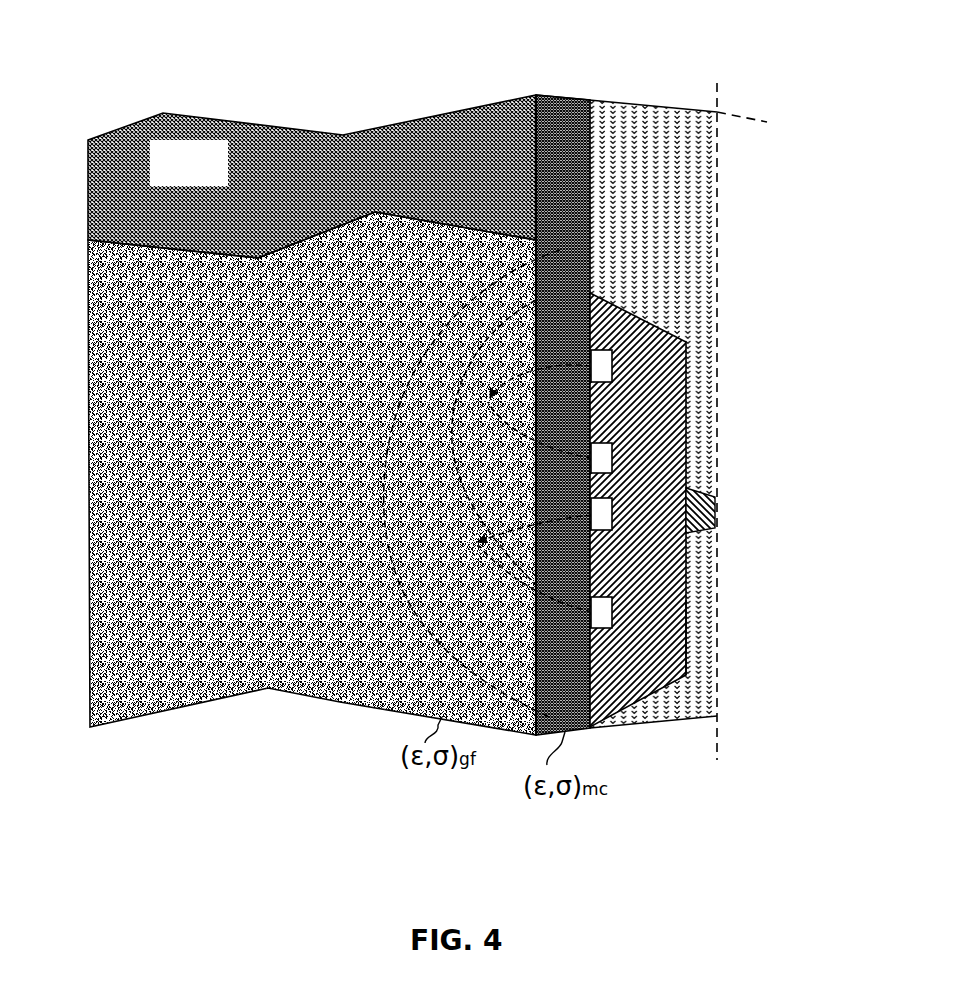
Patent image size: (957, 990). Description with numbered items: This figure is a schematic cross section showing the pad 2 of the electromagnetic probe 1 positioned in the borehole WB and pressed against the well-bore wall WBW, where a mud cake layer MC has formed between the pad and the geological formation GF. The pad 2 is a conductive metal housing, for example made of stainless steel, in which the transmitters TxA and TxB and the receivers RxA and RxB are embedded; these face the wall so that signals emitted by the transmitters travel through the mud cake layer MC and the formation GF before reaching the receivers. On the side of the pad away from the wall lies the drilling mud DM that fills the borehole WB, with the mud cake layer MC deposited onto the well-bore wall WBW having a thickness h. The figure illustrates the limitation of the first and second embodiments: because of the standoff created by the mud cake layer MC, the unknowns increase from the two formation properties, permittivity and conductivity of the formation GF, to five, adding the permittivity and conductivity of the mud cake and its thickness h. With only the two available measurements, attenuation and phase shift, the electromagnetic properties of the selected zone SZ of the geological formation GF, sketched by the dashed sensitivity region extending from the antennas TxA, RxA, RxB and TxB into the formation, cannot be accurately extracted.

The geological formation GF is at (212, 180).
The well-bore wall WBW is at (536, 135).
The mud cake layer MC is at (567, 257).
The drilling mud DM is at (690, 175).
The electromagnetic probe 1 is at (717, 329).
The pad 2 is at (678, 660).
The transmitter TxA is at (608, 367).
The receiver RxA is at (608, 456).
The receiver RxB is at (603, 517).
The transmitter TxB is at (603, 612).
The selected zone SZ is at (406, 652).
The borehole WB is at (691, 745).
The mud cake thickness h is at (587, 77).